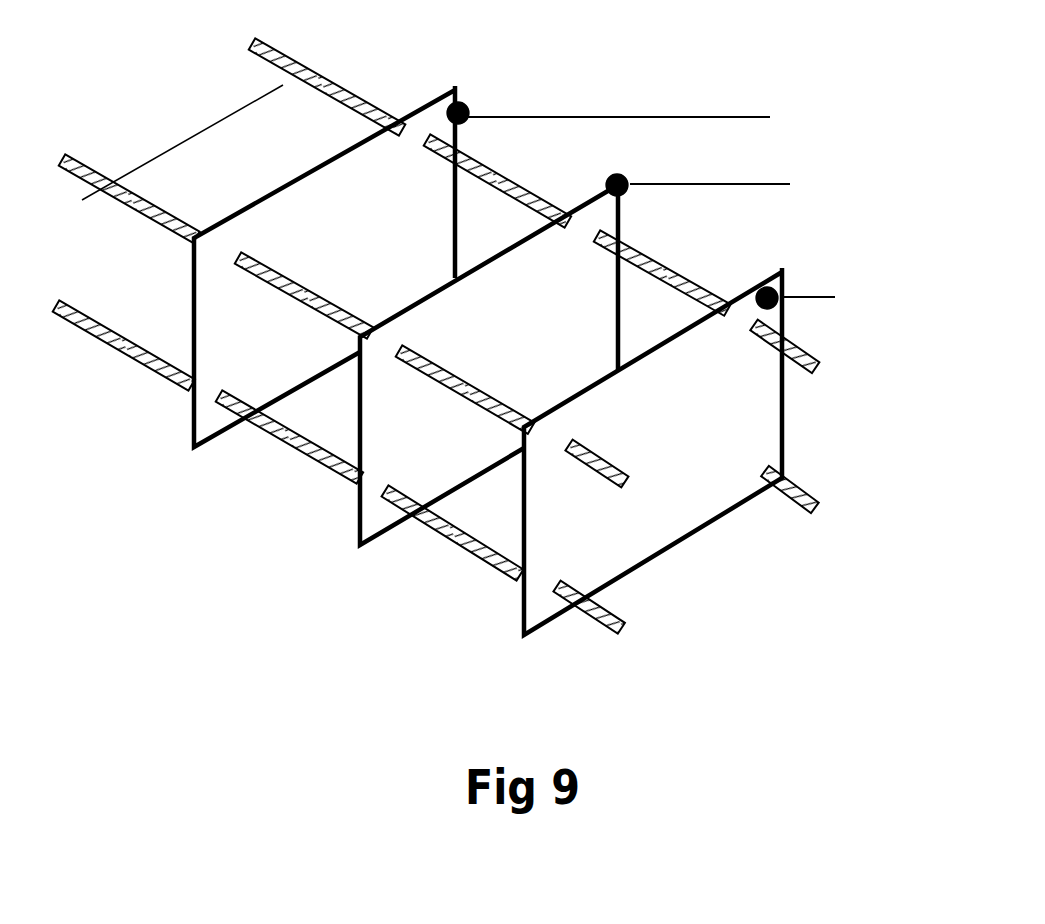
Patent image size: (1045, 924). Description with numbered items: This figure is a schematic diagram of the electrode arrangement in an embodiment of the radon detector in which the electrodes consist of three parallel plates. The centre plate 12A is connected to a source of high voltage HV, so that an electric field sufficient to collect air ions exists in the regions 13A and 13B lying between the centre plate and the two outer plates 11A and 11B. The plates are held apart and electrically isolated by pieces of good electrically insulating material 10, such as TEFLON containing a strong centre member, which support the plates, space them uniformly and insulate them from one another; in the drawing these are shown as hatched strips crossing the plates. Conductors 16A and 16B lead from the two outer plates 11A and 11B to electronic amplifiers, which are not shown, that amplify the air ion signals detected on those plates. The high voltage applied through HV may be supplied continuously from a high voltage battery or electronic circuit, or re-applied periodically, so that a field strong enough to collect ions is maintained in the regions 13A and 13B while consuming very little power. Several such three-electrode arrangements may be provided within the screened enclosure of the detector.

The electrically insulating material 10 is at (62, 298).
The plate 11A is at (191, 456).
The plate 11B is at (541, 637).
The centre plate 12A is at (365, 556).
The region 13A is at (337, 385).
The region 13B is at (505, 472).
The conductor 16A is at (676, 120).
The conductor 16B is at (830, 303).
The high voltage HV is at (750, 185).